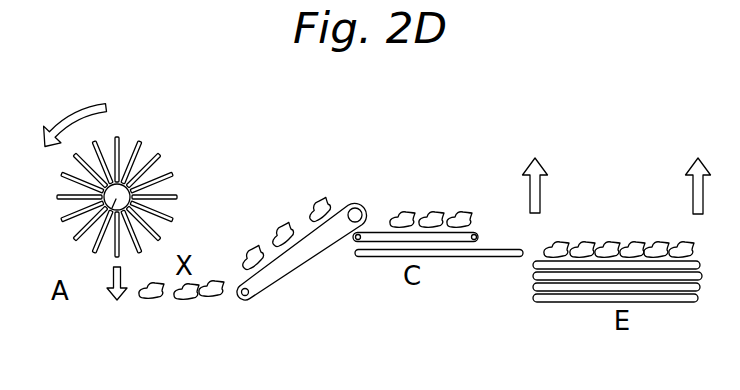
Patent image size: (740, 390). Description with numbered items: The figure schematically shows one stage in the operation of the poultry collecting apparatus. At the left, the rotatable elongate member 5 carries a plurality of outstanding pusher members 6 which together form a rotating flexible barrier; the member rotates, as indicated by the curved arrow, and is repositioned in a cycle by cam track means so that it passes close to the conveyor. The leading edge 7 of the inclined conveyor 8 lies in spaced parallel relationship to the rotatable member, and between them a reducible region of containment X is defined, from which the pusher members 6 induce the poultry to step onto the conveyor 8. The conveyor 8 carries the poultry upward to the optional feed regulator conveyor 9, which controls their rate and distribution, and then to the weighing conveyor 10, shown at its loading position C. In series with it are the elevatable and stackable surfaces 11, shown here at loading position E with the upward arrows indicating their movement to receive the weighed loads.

The rotatable elongate member 5 is at (87, 243).
The pusher members 6 is at (97, 142).
The leading edge 7 is at (232, 299).
The conveyor 8 is at (293, 255).
The feed regulator conveyor 9 is at (383, 239).
The weighing conveyor 10 is at (452, 256).
The elevatable and stackable surfaces 11 is at (533, 265).